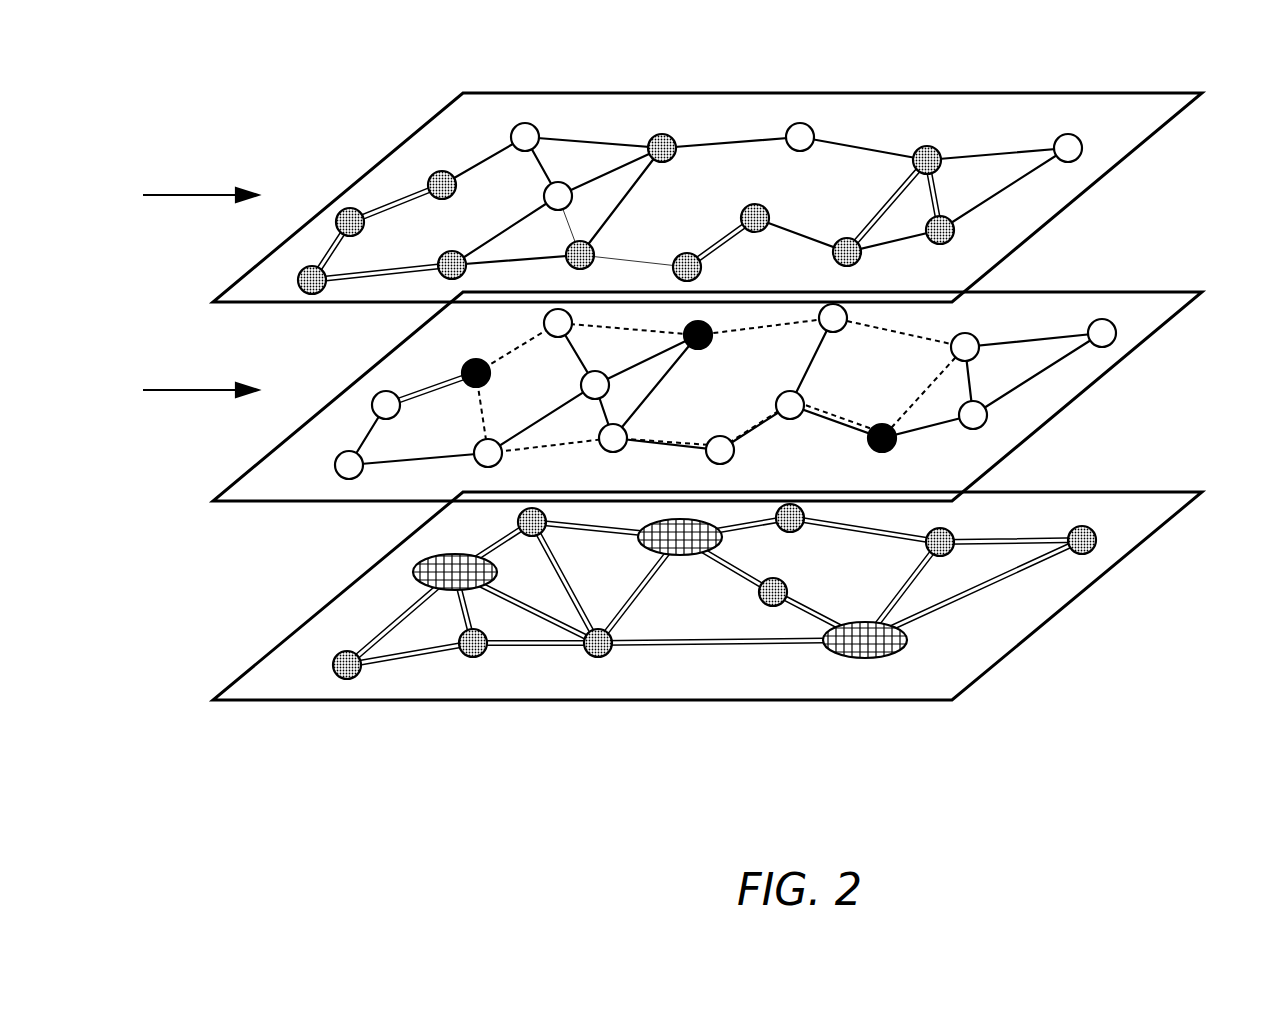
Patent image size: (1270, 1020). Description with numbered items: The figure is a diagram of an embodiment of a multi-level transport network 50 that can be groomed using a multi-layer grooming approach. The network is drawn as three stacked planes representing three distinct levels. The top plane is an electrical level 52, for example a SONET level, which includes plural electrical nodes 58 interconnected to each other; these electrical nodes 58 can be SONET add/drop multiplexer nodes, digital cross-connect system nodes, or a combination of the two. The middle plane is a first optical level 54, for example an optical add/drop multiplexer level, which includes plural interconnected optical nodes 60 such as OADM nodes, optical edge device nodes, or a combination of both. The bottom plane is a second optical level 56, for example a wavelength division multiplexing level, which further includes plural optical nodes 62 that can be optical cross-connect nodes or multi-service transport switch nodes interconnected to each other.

The multi-level transport network 50 is at (686, 411).
The electrical level 52 is at (724, 152).
The first optical level 54 is at (686, 442).
The second optical level 56 is at (724, 656).
The electrical nodes 58 is at (748, 212).
The optical nodes 60 is at (476, 387).
The optical nodes 62 is at (448, 590).